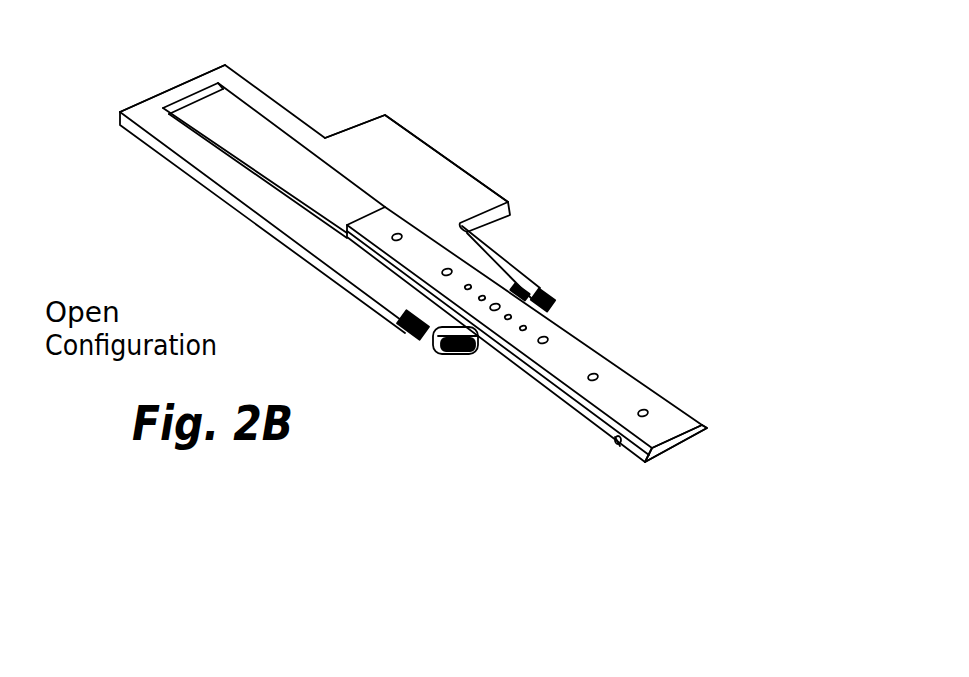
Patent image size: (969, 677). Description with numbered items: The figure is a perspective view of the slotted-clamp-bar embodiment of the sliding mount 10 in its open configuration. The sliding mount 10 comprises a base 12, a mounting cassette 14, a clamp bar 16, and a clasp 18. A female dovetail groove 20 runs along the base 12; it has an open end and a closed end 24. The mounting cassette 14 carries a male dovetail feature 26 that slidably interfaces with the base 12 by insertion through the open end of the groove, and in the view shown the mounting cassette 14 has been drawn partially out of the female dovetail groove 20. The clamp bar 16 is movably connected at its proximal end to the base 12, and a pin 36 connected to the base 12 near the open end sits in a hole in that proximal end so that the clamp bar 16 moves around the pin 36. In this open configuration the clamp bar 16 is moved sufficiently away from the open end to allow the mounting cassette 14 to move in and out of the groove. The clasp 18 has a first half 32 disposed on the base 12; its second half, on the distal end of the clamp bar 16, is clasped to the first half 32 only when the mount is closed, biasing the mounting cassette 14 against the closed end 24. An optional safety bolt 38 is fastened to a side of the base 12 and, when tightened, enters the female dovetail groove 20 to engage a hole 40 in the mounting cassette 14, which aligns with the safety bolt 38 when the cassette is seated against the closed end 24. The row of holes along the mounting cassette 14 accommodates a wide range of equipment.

The sliding mount 10 is at (678, 144).
The base 12 is at (407, 127).
The mounting cassette 14 is at (596, 345).
The clamp bar 16 is at (443, 355).
The clasp 18 is at (553, 300).
The female dovetail groove 20 is at (262, 162).
The closed end 24 is at (190, 97).
The male dovetail feature 26 is at (706, 431).
The first half 32 is at (519, 292).
The pin 36 is at (467, 352).
The safety bolt 38 is at (400, 327).
The hole 40 is at (618, 443).